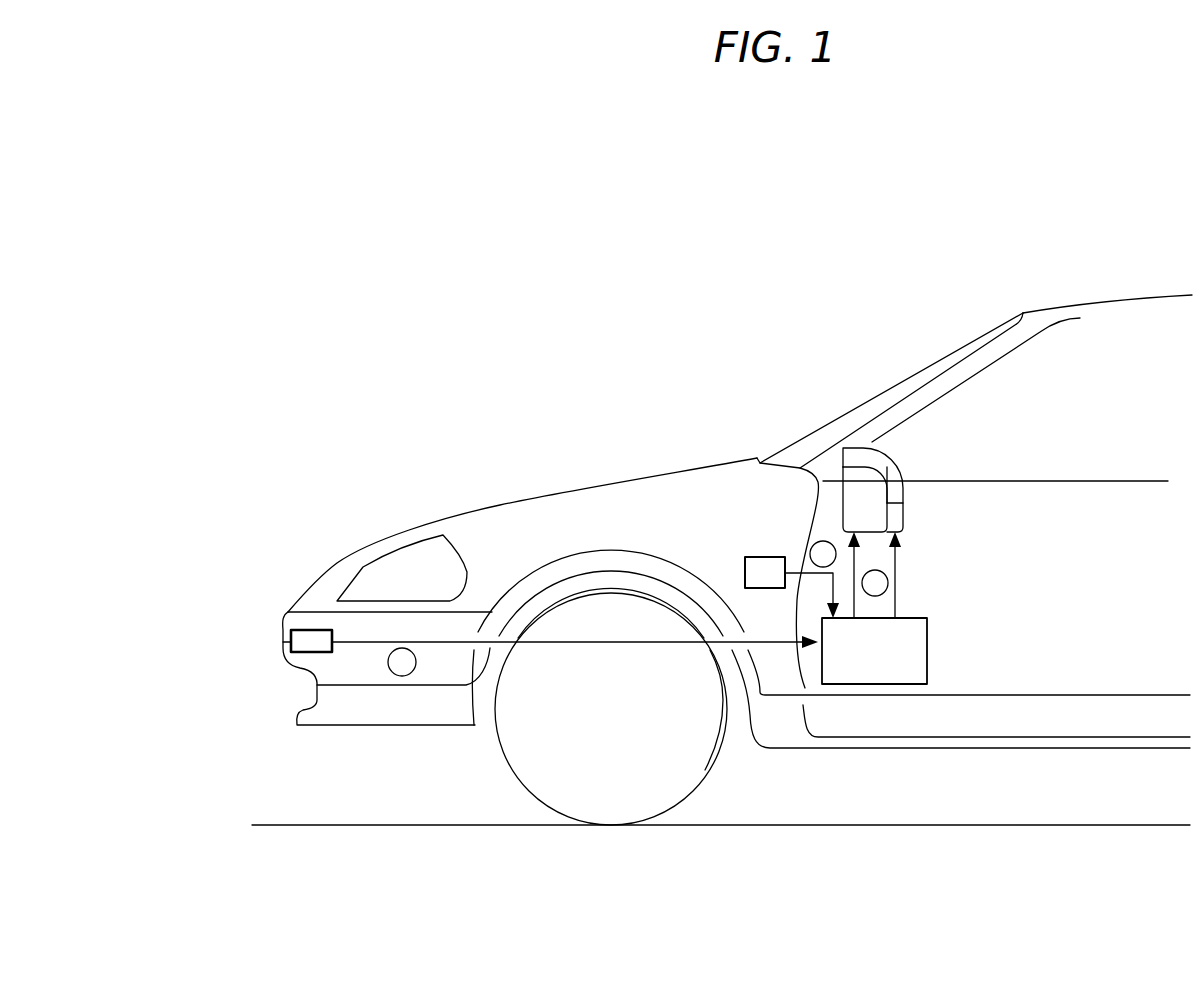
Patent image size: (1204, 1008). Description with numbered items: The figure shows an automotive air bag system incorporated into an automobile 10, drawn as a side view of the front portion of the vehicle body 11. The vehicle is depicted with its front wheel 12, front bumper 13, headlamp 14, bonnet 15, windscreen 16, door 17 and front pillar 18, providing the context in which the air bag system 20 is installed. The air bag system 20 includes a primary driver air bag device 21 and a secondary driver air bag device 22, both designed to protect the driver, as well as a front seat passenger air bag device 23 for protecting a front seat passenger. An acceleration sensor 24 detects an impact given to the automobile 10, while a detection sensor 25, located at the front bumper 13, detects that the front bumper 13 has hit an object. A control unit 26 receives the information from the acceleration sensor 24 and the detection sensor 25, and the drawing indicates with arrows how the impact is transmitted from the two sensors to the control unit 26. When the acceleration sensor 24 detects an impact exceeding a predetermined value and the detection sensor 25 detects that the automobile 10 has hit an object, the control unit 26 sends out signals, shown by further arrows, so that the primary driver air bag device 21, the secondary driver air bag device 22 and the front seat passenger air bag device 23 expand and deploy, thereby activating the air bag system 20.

The automobile 10 is at (609, 233).
The vehicle body 11 is at (596, 411).
The front wheel 12 is at (523, 787).
The front bumper 13 is at (287, 612).
The headlamp 14 is at (390, 568).
The bonnet 15 is at (510, 502).
The windscreen 16 is at (895, 386).
The door 17 is at (1100, 651).
The front pillar 18 is at (963, 367).
The air bag system 20 is at (775, 514).
The primary driver air bag device 21 is at (898, 470).
The secondary driver air bag device 22 is at (907, 518).
The front seat passenger air bag device 23 is at (867, 447).
The acceleration sensor 24 is at (746, 560).
The detection sensor 25 is at (288, 647).
The control unit 26 is at (928, 643).